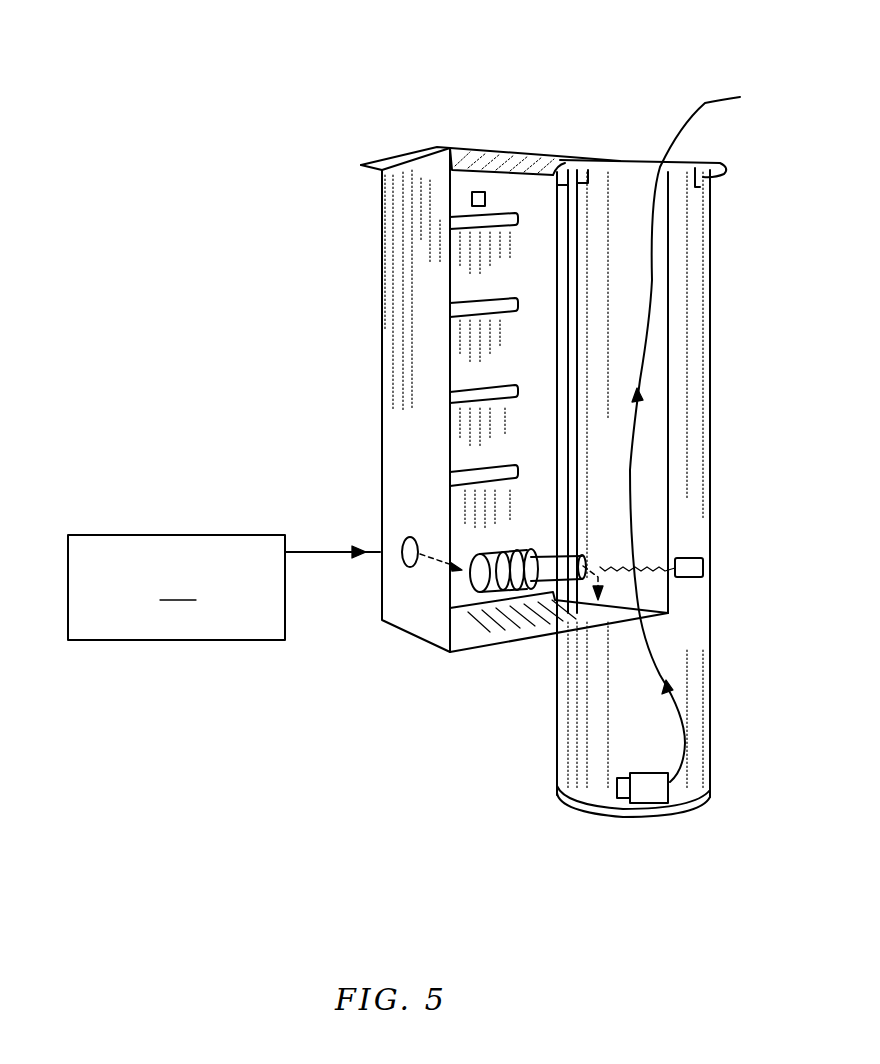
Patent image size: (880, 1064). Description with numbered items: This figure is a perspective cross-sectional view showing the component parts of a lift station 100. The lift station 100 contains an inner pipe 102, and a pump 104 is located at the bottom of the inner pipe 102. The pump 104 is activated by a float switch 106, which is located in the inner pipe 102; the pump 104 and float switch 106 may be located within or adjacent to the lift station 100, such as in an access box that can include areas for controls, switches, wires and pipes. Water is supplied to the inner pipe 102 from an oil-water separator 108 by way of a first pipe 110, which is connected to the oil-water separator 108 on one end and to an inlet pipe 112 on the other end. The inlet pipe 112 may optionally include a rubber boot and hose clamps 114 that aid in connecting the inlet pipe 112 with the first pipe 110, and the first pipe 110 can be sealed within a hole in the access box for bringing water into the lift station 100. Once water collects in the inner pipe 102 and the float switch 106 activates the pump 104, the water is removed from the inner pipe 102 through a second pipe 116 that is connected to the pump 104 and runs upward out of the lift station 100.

The lift station 100 is at (210, 168).
The inner pipe 102 is at (712, 688).
The pump 104 is at (650, 800).
The float switch 106 is at (690, 558).
The oil-water separator 108 is at (176, 587).
The first pipe 110 is at (338, 554).
The inlet pipe 112 is at (540, 637).
The rubber boot and hose clamps 114 is at (470, 604).
The second pipe 116 is at (706, 104).